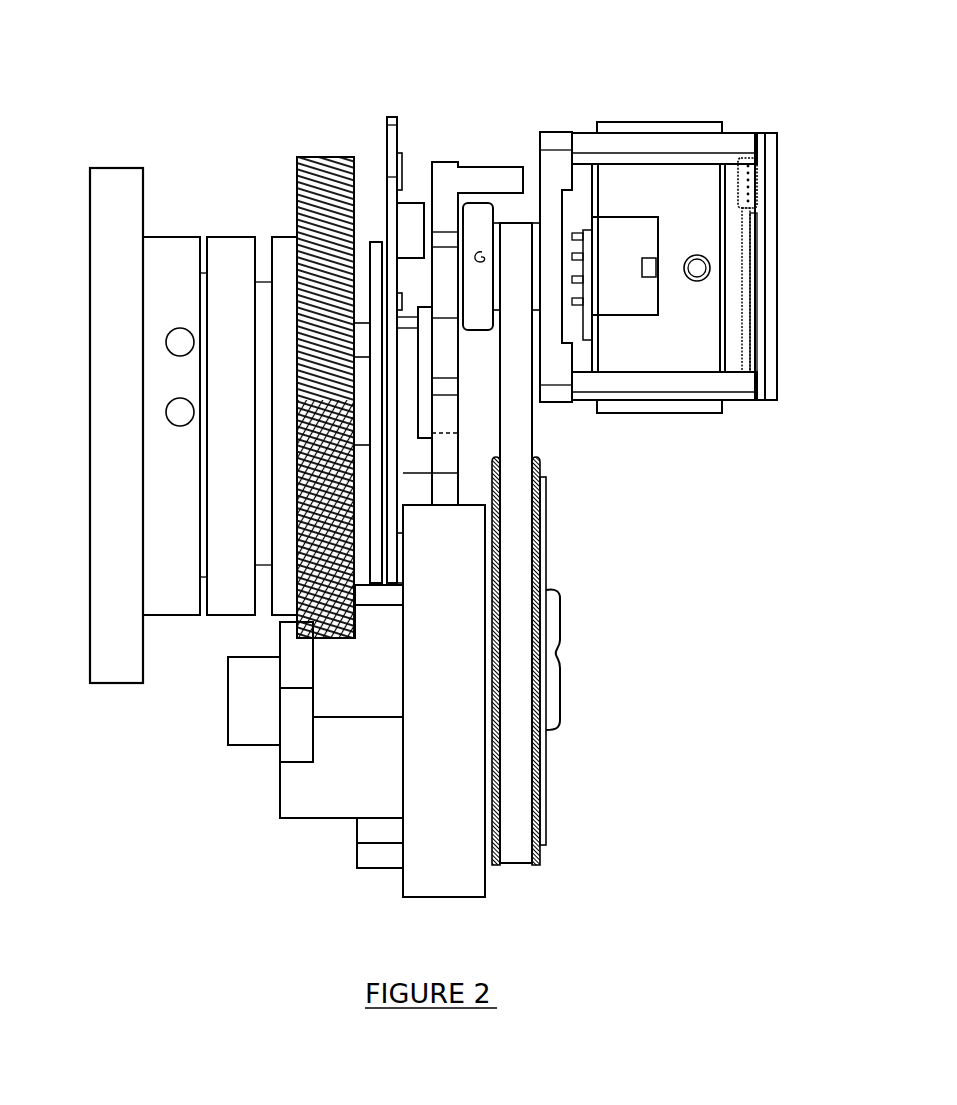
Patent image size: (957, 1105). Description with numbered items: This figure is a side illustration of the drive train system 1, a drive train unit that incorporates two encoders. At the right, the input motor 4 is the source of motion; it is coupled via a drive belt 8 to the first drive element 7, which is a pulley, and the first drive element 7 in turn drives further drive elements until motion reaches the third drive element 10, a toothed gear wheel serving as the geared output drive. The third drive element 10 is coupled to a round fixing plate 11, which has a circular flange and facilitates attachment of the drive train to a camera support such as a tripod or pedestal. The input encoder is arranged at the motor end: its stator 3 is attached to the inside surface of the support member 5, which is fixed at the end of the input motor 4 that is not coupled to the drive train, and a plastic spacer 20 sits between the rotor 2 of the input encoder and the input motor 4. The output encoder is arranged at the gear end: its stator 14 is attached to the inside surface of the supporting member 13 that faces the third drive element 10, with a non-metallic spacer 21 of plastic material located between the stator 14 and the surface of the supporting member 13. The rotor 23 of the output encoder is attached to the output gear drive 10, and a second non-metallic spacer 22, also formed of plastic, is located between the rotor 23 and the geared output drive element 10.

The drive train system 1 is at (376, 98).
The rotor of the input encoder 2 is at (748, 233).
The stator of the input encoder 3 is at (767, 250).
The input motor 4 is at (638, 190).
The support member 5 is at (773, 280).
The first drive element 7 is at (562, 675).
The drive belt 8 is at (522, 547).
The third drive element 10 is at (307, 185).
The round fixing plate 11 is at (110, 658).
The supporting member 13 is at (482, 173).
The stator of the output encoder 14 is at (390, 127).
The plastic spacer 20 is at (732, 230).
The non-metallic spacer 21 is at (408, 465).
The second non-metallic spacer 22 is at (365, 422).
The rotor of the output encoder 23 is at (378, 312).